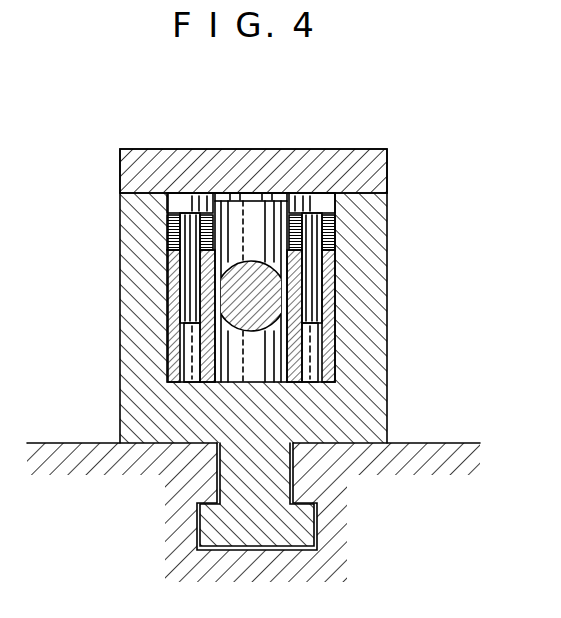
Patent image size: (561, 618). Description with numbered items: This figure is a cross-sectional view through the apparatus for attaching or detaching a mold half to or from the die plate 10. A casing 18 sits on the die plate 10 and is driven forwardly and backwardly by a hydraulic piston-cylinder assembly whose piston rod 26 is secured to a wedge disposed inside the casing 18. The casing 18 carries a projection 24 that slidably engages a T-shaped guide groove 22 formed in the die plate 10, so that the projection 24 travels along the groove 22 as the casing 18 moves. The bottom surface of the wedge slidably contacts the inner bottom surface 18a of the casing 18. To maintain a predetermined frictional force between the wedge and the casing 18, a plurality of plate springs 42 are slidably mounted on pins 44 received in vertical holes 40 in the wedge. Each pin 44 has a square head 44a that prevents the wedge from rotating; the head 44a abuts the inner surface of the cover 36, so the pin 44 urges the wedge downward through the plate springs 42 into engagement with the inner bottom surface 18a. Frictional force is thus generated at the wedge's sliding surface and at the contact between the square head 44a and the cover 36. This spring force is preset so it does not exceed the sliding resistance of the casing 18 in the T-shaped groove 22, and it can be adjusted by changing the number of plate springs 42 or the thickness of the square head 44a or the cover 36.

The die plate 10 is at (55, 460).
The casing 18 is at (388, 203).
The inner bottom surface of the casing 18a is at (256, 382).
The T-shaped guide groove 22 is at (317, 532).
The projection 24 is at (220, 535).
The piston rod 26 is at (243, 262).
The cover 36 is at (251, 167).
The vertical holes 40 is at (190, 362).
The plate springs 42 is at (170, 232).
The pins 44 is at (187, 296).
The square head 44a is at (177, 200).